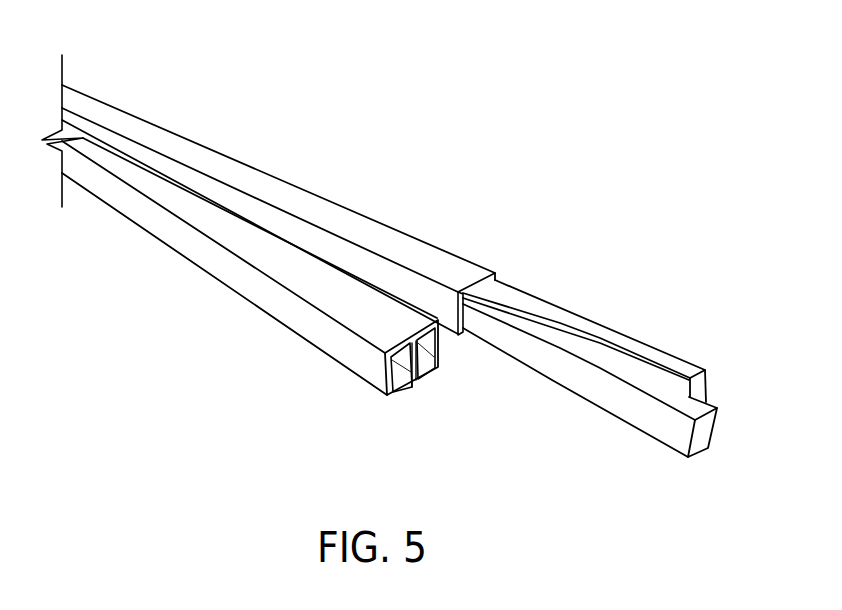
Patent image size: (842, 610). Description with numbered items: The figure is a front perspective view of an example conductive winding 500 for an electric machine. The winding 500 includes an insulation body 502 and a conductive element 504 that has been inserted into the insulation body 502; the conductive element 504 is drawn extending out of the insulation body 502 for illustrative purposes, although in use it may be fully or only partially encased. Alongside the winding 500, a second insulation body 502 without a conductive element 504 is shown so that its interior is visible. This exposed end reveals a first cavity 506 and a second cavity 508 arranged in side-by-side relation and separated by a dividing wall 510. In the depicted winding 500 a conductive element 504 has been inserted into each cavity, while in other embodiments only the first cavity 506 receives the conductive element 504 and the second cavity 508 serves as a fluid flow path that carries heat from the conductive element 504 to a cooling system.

The conductive winding 500 is at (427, 187).
The insulation body 502 is at (220, 162).
The conductive element 504 is at (665, 362).
The first cavity 506 is at (398, 400).
The second cavity 508 is at (438, 372).
The dividing wall 510 is at (421, 378).